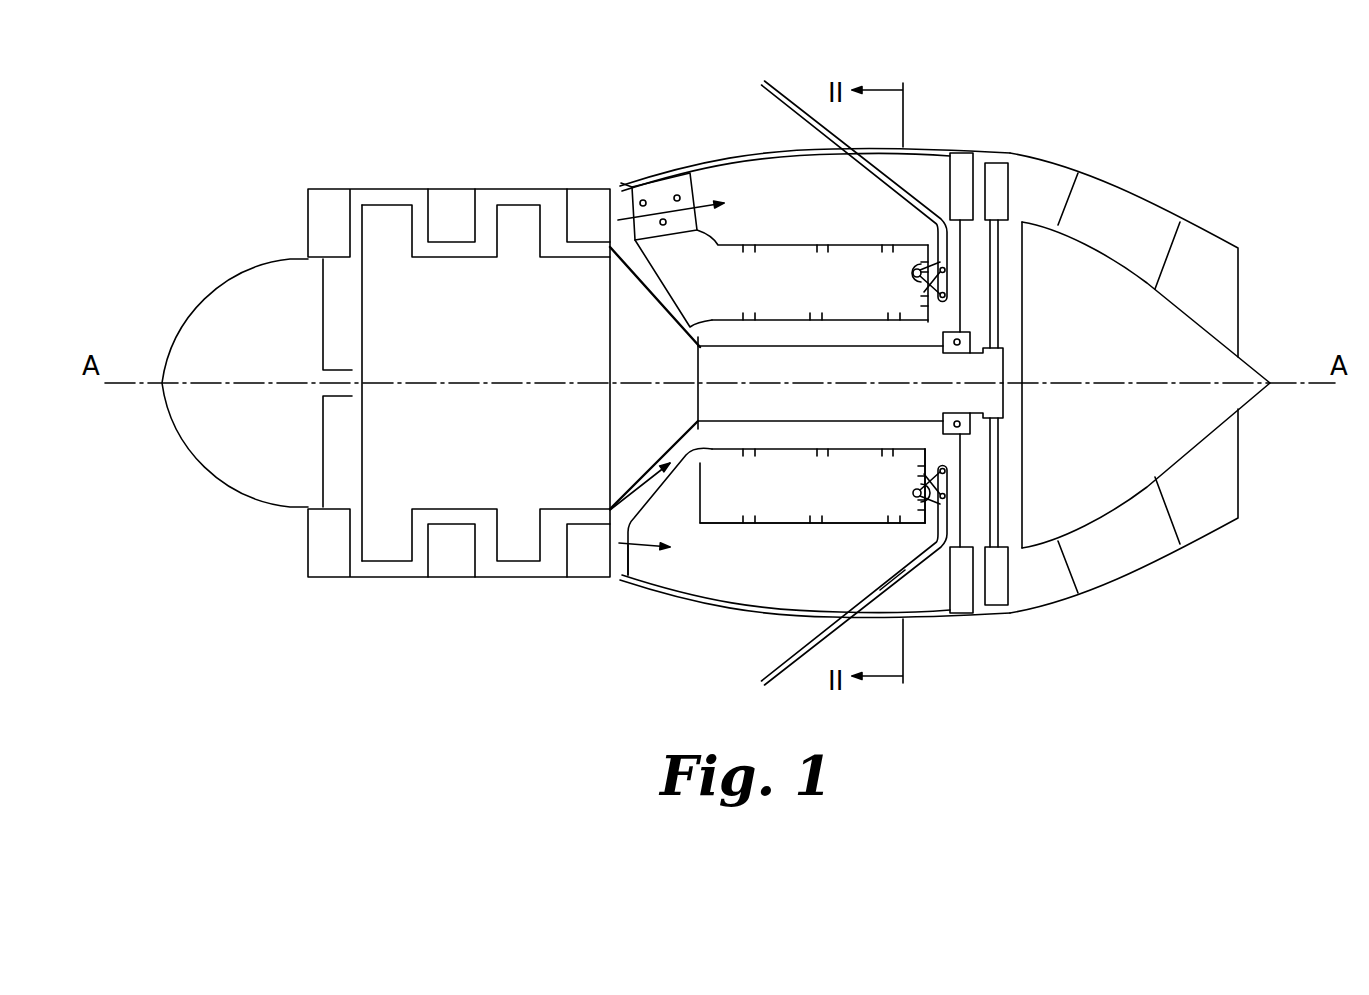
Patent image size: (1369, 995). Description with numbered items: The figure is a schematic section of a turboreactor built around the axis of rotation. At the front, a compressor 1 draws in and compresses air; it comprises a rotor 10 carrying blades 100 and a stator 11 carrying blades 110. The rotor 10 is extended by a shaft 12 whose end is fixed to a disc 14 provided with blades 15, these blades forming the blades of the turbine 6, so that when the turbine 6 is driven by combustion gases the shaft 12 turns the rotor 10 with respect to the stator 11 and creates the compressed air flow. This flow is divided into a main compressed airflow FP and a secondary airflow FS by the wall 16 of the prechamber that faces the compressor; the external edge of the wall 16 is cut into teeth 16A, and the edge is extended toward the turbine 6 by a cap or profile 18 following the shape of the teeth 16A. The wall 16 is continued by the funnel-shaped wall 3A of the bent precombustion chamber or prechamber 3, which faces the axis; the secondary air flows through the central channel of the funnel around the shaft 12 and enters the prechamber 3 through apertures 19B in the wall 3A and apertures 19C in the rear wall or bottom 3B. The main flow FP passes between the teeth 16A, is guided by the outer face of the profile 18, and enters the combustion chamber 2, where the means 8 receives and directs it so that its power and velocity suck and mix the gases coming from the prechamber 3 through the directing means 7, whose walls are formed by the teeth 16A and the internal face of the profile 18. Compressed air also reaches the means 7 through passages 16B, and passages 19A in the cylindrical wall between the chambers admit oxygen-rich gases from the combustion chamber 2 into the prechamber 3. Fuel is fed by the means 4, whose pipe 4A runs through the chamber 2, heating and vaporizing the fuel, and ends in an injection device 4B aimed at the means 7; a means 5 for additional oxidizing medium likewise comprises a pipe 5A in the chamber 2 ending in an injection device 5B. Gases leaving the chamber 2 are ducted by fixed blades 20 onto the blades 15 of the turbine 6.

The blades 100 is at (380, 220).
The compressor 1 is at (427, 157).
The blades 110 is at (455, 195).
The stator 11 is at (514, 195).
The rotor 10 is at (417, 448).
The wall 16 is at (606, 195).
The teeth 16A is at (621, 183).
The passages 16B is at (718, 175).
The cap or profile 18 is at (700, 172).
The main compressed airflow FP is at (663, 196).
The means receiving and directing compressed air 8 is at (663, 158).
The means for supplying fuel 4 is at (897, 192).
The pipe 4A is at (808, 122).
The injection device 4B is at (942, 262).
The combustion chamber 2 is at (822, 240).
The fixed blades 20 is at (975, 152).
The blades 15 is at (1003, 188).
The disc 14 is at (1000, 273).
The turbine 6 is at (1034, 140).
The shaft 12 is at (806, 376).
The precombustion chamber or prechamber 3 is at (820, 290).
The passages 19A is at (752, 243).
The openings or apertures 19B is at (888, 322).
The wall of the prechamber 3A is at (690, 333).
The rear wall or bottom 3B is at (920, 447).
The openings or apertures 19C is at (922, 478).
The means for supplying oxidizing medium 5 is at (760, 672).
The pipe 5A is at (907, 562).
The injection device 5B is at (920, 520).
The means for directing combustion gases 7 is at (647, 567).
The secondary airflow FS is at (619, 543).